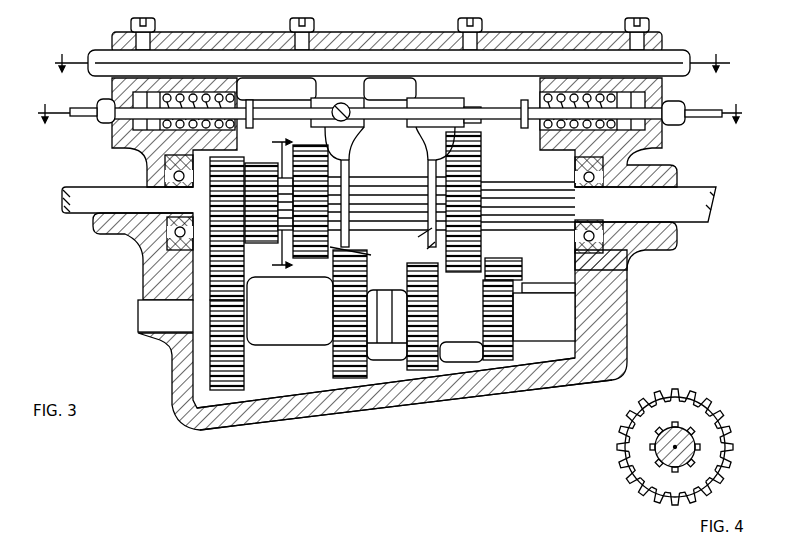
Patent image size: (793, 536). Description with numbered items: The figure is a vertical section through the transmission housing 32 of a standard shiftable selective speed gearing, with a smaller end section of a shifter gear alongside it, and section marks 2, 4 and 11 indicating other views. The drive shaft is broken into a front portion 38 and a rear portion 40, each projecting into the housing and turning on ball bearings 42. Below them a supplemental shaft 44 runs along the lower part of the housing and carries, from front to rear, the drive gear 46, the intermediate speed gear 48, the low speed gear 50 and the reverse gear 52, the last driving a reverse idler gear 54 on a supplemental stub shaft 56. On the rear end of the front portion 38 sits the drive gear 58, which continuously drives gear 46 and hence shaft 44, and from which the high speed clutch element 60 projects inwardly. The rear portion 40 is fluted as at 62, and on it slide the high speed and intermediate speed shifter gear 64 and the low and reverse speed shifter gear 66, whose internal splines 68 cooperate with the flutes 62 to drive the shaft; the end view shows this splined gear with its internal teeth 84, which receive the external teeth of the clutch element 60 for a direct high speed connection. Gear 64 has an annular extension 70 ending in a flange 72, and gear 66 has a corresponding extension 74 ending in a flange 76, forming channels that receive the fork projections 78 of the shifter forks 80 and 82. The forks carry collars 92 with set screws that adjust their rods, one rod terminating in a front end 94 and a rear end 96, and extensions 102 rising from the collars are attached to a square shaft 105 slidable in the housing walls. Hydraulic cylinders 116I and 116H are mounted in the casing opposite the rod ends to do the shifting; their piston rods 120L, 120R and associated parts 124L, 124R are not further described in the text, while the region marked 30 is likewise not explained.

In FIG. 3, the section line 2-2 (shifter rail) 2 is at (386, 113).
In FIG. 3, the section line 4- 4 is at (282, 205).
In FIG. 3, the section line 11- 11 is at (394, 64).
In FIG. 3, the gear casing 30 is at (463, 357).
In FIG. 3, the transmission housing 32 is at (523, 367).
In FIG. 3, the front portion of the drive shaft 38 is at (82, 202).
In FIG. 3, the rear portion of the drive shaft 40 is at (678, 210).
In FIG. 3, the ball bearings 42 is at (173, 250).
In FIG. 3, the supplemental shaft 44 is at (365, 319).
In FIG. 3, the drive gear 46 is at (244, 376).
In FIG. 3, the intermediate speed gear 48 is at (350, 363).
In FIG. 3, the low speed gear 50 is at (418, 345).
In FIG. 3, the reverse gear 52 is at (520, 346).
In FIG. 3, the reverse idler gear 54 is at (522, 270).
In FIG. 3, the supplemental stub shaft 56 is at (551, 293).
In FIG. 3, the drive gear 58 is at (228, 159).
In FIG. 3, the high speed clutch element 60 is at (263, 222).
In FIG. 3, the flutes 62 is at (520, 205).
In FIG. 4, the flutes 62 is at (693, 447).
In FIG. 3, the high speed and intermediate speed shifter gear 64 is at (312, 245).
In FIG. 4, the high speed and intermediate speed shifter gear 64 is at (692, 467).
In FIG. 3, the low and reverse speed shifter gear 66 is at (481, 239).
In FIG. 4, the splines 68 is at (692, 432).
In FIG. 3, the annular extension 70 is at (360, 258).
In FIG. 3, the flange 72 is at (332, 233).
In FIG. 3, the extension 74 is at (421, 255).
In FIG. 3, the flange 76 is at (414, 238).
In FIG. 3, the fork projections 78 is at (330, 178).
In FIG. 3, the shifter fork 80 is at (333, 142).
In FIG. 3, the shifter fork 82 is at (438, 133).
In FIG. 4, the internal teeth 84 is at (708, 432).
In FIG. 3, the collars 92 is at (363, 125).
In FIG. 3, the front end 94 is at (311, 109).
In FIG. 3, the rear end 96 is at (471, 119).
In FIG. 3, the extensions 102 is at (489, 89).
In FIG. 3, the square shaft 105 is at (541, 72).
In FIG. 3, the actuating hydraulic cylinder 116I is at (175, 126).
In FIG. 3, the actuating hydraulic cylinder 116H is at (605, 132).
In FIG. 3, the lever 120R is at (185, 535).
In FIG. 3, the lever 124R is at (253, 535).
In FIG. 3, the lever 124L is at (525, 535).
In FIG. 3, the lever 120L is at (570, 535).